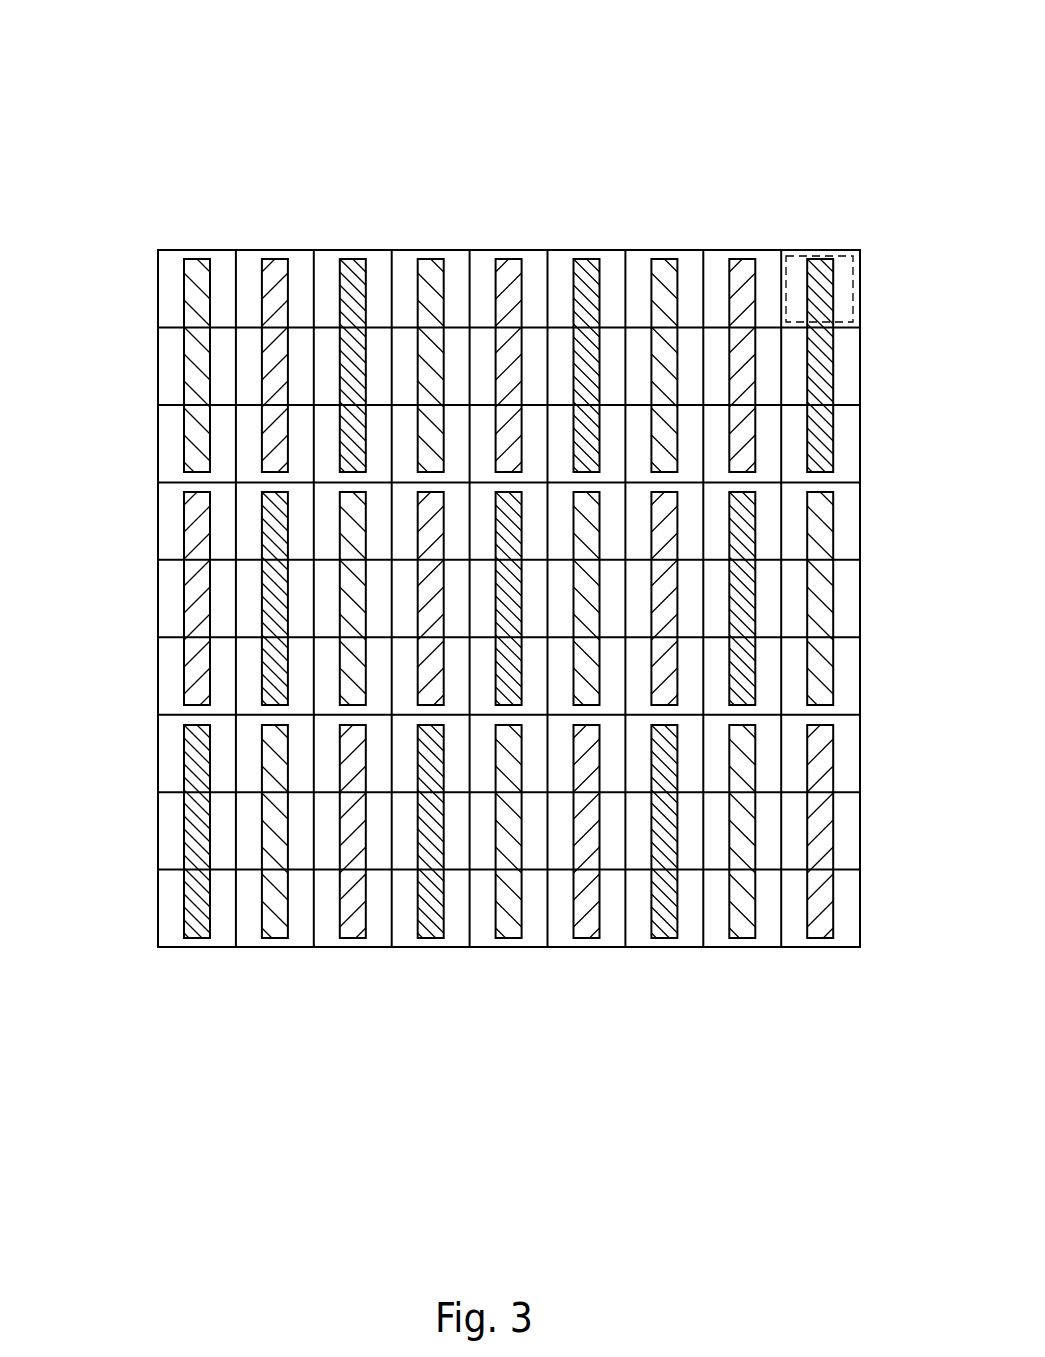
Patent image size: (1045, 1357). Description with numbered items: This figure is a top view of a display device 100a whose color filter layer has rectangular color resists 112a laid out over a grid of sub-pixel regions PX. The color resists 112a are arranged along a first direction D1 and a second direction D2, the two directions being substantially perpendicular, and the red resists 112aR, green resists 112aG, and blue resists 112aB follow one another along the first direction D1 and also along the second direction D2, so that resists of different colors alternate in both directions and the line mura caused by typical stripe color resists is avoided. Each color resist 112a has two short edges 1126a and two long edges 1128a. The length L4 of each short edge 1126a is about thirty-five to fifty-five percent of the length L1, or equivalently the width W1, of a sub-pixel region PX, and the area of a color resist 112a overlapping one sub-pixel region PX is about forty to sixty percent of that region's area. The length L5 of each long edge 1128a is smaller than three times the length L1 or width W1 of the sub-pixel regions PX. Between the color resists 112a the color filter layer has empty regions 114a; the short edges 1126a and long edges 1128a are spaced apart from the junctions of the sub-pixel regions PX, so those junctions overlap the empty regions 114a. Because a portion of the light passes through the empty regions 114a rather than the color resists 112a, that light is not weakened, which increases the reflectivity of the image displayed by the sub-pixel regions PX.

The display device 100a is at (93, 31).
The empty regions 114a is at (173, 293).
The color resists 112a is at (440, 536).
The red resists 112aR is at (200, 272).
The green resists 112aG is at (278, 270).
The blue resists 112aB is at (358, 268).
The long edges 1128a is at (176, 432).
The short edges 1126a is at (180, 483).
The sub-pixel region PX is at (852, 278).
The length of the sub-pixel region L1 is at (237, 250).
The length of the short edges L4 is at (237, 229).
The length of the long edges L5 is at (184, 258).
The width of the sub-pixel region W1 is at (885, 250).
The first direction D1 is at (807, 1124).
The second direction D2 is at (807, 1124).